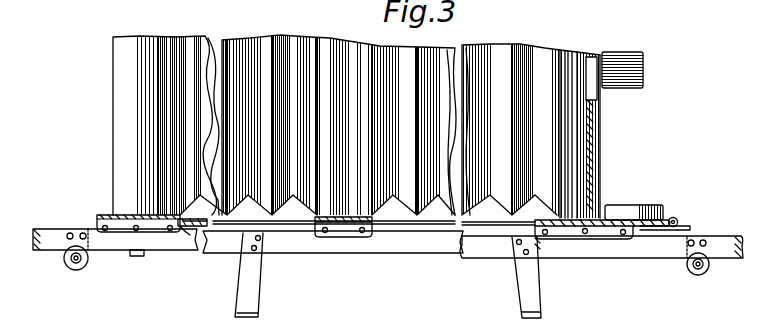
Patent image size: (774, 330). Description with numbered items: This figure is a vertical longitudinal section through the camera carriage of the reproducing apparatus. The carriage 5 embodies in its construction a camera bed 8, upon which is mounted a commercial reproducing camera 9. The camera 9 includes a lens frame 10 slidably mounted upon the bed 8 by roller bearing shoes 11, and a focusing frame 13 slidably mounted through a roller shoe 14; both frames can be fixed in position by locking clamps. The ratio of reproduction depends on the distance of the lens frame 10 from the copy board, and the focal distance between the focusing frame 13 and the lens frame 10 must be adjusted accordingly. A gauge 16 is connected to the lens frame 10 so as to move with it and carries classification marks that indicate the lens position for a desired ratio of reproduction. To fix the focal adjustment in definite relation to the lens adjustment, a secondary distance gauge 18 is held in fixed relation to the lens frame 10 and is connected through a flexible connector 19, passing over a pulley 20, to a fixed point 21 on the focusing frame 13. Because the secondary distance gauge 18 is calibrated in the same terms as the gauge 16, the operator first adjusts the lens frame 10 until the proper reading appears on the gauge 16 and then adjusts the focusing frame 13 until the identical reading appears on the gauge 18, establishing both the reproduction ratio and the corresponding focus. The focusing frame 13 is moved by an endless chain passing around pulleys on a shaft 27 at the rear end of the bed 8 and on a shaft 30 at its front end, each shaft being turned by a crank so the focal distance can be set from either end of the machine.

The carriage 5 is at (243, 297).
The camera bed 8 is at (482, 250).
The commercial reproducing camera 9 is at (315, 38).
The lens frame 10 is at (596, 144).
The roller bearing shoes 11 is at (607, 240).
The focusing frame 13 is at (118, 109).
The roller shoe 14 is at (140, 272).
The gauge 16 is at (602, 44).
The secondary distance gauge 18 is at (655, 197).
The flexible connector 19 is at (412, 268).
The pulley 20 is at (678, 222).
The fixed point 21 is at (184, 236).
The shaft 27 is at (80, 262).
The shaft 30 is at (705, 268).